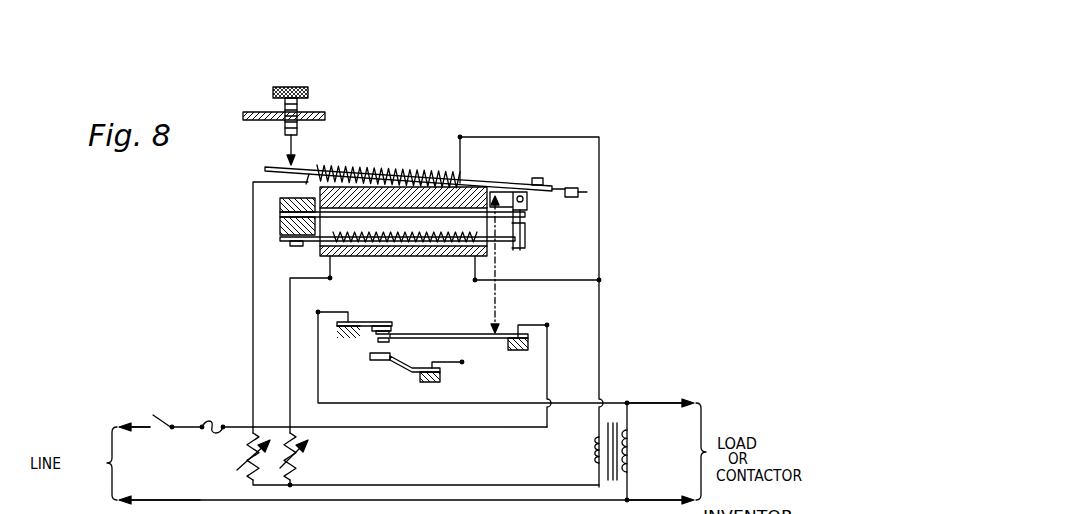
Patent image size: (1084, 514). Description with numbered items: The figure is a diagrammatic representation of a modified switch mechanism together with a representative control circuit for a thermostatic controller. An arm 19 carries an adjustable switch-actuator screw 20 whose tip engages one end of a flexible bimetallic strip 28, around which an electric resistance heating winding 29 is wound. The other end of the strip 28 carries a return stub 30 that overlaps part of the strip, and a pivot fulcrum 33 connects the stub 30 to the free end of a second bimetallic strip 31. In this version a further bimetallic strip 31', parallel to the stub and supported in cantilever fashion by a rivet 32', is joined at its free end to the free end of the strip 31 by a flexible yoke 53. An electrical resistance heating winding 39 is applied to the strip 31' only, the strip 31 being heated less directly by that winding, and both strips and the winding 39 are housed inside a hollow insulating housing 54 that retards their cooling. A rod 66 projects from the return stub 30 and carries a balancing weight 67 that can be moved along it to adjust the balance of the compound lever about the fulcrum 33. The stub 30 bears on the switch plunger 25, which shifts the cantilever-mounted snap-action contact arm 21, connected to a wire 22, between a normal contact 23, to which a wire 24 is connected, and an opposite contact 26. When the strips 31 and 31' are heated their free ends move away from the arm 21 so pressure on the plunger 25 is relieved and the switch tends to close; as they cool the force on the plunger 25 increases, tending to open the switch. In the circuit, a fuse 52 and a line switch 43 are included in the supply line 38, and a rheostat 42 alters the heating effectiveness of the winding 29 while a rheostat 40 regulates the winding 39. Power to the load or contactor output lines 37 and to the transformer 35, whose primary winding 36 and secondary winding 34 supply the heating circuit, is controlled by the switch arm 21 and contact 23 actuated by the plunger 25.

The arm 19 is at (256, 111).
The switch-actuator screw 20 is at (299, 130).
The bimetallic strip 28 is at (266, 169).
The resistance heating winding 29 is at (396, 167).
The hollow insulating housing 54 is at (318, 190).
The bimetallic strip 31 is at (402, 216).
The resistance heating winding 39 is at (374, 233).
The bimetallic strip 31' is at (417, 255).
The rivet 32' is at (283, 255).
The return stub 30 is at (540, 190).
The pivot fulcrum 33 is at (524, 203).
The flexible yoke 53 is at (527, 233).
The rod 66 is at (545, 182).
The balancing weight 67 is at (585, 188).
The switch plunger 25 is at (500, 298).
The wire 24 is at (336, 313).
The contact 23 is at (395, 327).
The contact arm 21 is at (440, 333).
The wire 22 is at (535, 323).
The contact 26 is at (370, 356).
The line switch 43 is at (158, 417).
The fuse 52 is at (211, 420).
The rheostat 42 is at (243, 458).
The rheostat 40 is at (306, 455).
The supply line 38 is at (140, 499).
The transformer 35 is at (612, 422).
The secondary winding 34 is at (592, 452).
The primary winding 36 is at (631, 451).
The output lines 37 is at (656, 404).